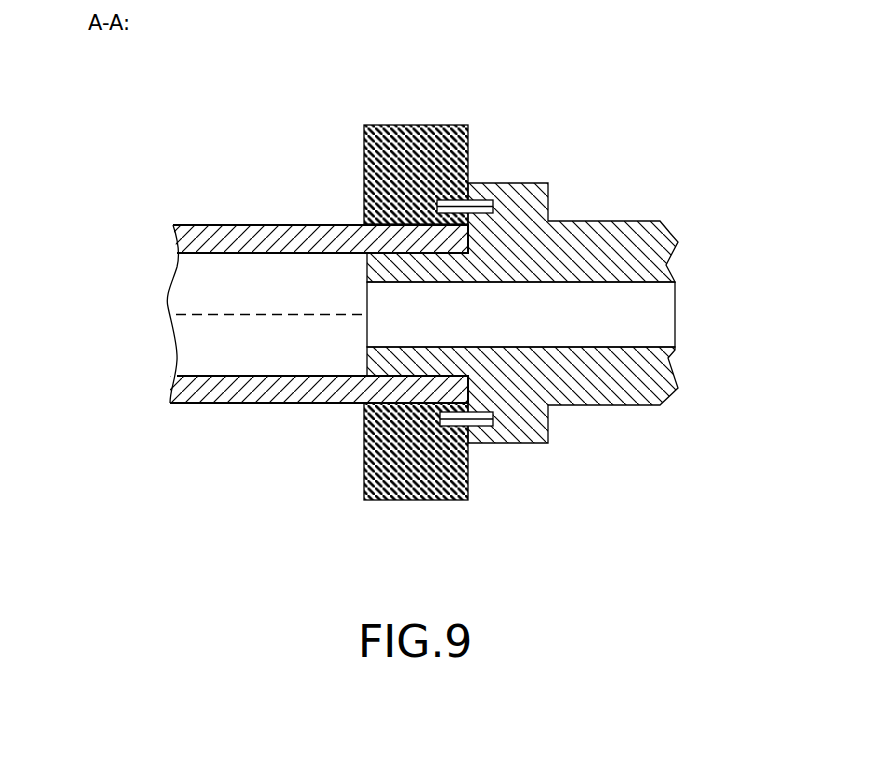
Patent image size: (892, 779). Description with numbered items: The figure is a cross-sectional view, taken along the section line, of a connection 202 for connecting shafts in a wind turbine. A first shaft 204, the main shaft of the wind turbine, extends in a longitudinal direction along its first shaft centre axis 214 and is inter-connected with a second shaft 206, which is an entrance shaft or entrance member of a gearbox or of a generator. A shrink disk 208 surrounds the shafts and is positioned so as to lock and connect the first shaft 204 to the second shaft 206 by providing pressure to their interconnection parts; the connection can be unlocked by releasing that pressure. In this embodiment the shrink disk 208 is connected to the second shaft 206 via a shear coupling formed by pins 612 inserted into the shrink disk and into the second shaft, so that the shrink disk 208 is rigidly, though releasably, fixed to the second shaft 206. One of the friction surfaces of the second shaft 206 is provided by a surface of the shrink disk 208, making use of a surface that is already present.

The connection 202 is at (327, 512).
The first shaft 204 is at (267, 225).
The second shaft 206 is at (650, 220).
The shrink disk 208 is at (458, 125).
The first shaft centre axis 214 is at (175, 300).
The pins 612 is at (525, 443).